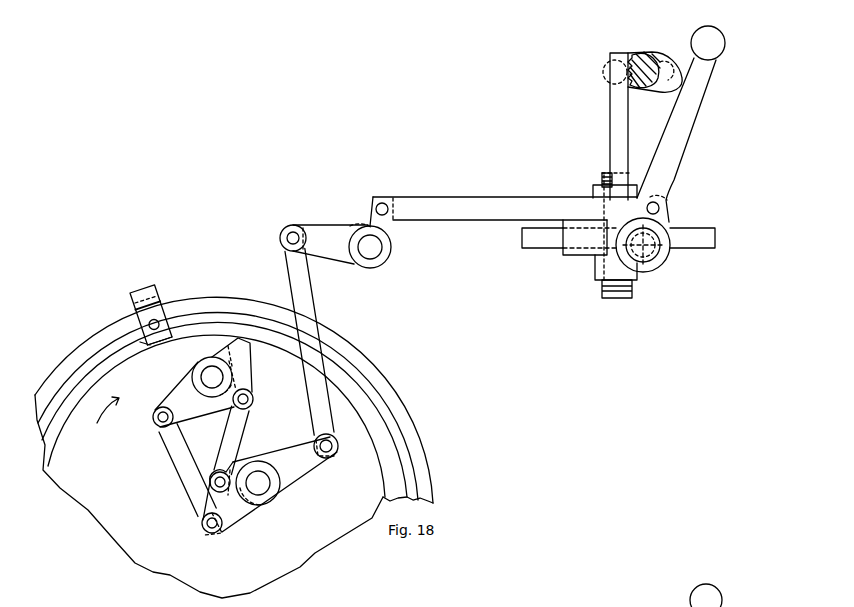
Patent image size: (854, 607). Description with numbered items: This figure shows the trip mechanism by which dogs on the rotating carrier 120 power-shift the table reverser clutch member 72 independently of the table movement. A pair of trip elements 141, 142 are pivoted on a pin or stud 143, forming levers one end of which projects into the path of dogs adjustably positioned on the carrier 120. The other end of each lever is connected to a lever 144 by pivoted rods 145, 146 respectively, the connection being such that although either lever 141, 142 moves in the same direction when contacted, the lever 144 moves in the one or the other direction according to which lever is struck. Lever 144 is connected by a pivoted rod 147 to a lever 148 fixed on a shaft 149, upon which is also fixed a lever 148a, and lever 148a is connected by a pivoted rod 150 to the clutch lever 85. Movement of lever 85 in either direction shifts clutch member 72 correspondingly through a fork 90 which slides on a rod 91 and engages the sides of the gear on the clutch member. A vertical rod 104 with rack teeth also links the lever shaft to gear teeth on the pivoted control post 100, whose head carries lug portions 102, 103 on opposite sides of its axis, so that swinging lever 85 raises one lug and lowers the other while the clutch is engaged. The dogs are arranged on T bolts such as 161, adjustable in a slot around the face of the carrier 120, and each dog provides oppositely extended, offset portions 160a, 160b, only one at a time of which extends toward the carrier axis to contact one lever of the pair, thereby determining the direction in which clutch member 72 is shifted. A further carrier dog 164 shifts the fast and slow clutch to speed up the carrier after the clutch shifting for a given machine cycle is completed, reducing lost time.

The shiftable intermediate clutch member 72 is at (610, 300).
The lever 85 is at (725, 44).
The fork 90 is at (596, 180).
The rod 91 is at (692, 228).
The pivoted control post 100 is at (650, 55).
The lug portion 102 is at (663, 90).
The lug portion 103 is at (604, 75).
The vertical rod 104 is at (610, 129).
The carrier 120 is at (387, 382).
The trip element 141 is at (247, 356).
The trip element 142 is at (208, 353).
The pin or stud 143 is at (213, 385).
The lever 144 is at (282, 455).
The pivoted rod 145 is at (247, 423).
The pivoted rod 146 is at (177, 468).
The pivoted rod 147 is at (315, 303).
The lever 148 is at (325, 228).
The lever 148a is at (394, 228).
The shaft 149 is at (375, 256).
The pivoted rod 150 is at (467, 203).
The dog portion 160a is at (148, 333).
The dog portion 160b is at (168, 340).
The T bolt 161 is at (145, 342).
The dog 164 is at (148, 302).